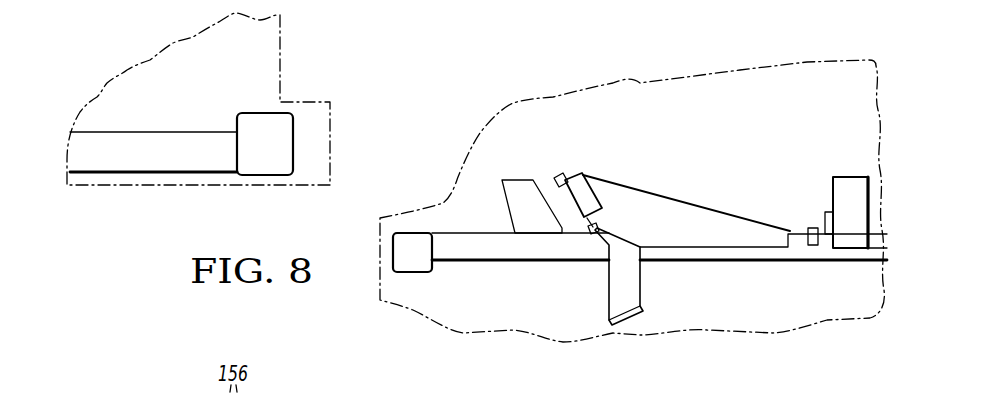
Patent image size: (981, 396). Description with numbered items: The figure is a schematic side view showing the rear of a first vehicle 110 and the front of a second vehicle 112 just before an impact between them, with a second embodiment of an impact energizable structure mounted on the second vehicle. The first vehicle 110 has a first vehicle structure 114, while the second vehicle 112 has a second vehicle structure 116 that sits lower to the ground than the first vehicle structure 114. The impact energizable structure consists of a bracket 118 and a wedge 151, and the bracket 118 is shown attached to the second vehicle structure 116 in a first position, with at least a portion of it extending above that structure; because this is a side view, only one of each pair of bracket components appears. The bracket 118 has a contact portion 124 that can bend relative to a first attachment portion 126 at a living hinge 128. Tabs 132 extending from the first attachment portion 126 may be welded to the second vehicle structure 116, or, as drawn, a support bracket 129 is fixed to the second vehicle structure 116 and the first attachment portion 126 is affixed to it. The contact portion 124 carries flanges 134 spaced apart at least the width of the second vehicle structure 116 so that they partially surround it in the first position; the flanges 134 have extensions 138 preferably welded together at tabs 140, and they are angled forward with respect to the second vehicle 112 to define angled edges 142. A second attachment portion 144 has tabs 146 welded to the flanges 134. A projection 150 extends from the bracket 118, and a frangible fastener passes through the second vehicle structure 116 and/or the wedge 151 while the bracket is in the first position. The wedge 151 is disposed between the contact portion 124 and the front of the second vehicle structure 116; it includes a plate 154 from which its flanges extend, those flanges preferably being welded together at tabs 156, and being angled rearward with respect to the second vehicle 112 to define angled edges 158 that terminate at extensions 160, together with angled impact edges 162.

The first vehicle 110 is at (280, 67).
The second vehicle 112 is at (753, 65).
The first vehicle structure 114 is at (157, 173).
The second vehicle structure 116 is at (450, 263).
The bracket 118 is at (708, 208).
The contact portion 124 is at (623, 185).
The first attachment portion 126 is at (828, 214).
The living hinge 128 is at (793, 233).
The support bracket 129 is at (850, 177).
The tabs 132 is at (813, 245).
The flanges 134 is at (713, 248).
The extensions 138 is at (608, 285).
The tabs 140 is at (627, 322).
The angled edges 142 is at (600, 240).
The second attachment portion 144 is at (568, 220).
The tabs 146 is at (590, 186).
The projection 150 is at (599, 226).
The wedge 151 is at (507, 218).
The plate 154 is at (540, 236).
The tabs 156 is at (513, 180).
The angled edges 158 is at (540, 188).
The extensions 160 is at (560, 220).
The angled impact edges 162 is at (506, 197).